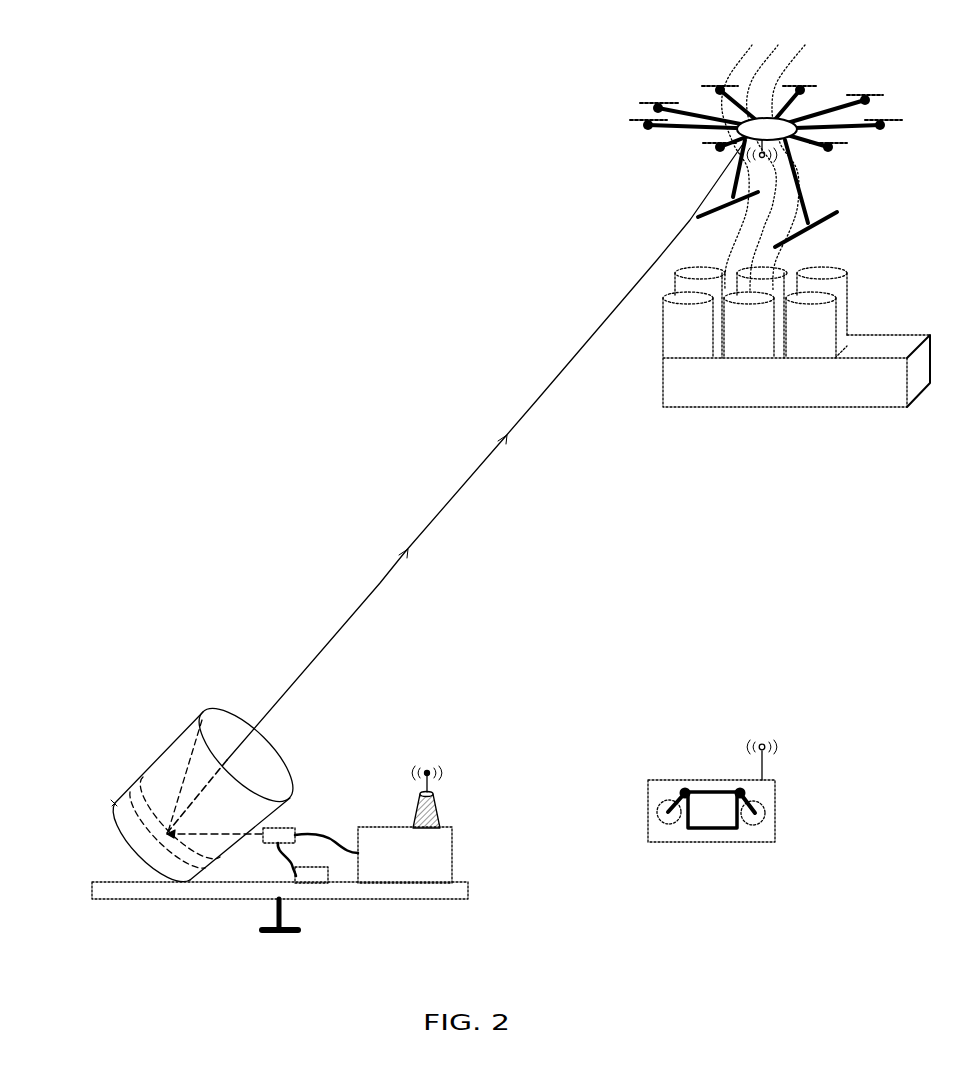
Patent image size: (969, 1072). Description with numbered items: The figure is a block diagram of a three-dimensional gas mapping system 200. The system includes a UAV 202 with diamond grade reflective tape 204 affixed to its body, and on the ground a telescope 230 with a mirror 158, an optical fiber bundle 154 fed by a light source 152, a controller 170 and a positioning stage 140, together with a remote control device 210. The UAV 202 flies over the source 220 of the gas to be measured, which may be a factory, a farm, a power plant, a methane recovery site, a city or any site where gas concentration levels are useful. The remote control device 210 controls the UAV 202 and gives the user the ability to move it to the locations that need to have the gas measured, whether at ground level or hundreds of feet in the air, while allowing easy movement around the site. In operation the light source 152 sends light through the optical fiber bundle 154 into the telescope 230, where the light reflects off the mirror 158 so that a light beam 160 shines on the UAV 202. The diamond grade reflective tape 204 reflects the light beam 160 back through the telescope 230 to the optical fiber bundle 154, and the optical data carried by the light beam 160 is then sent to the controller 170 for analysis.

The three-dimensional gas mapping system 200 is at (360, 390).
The UAV 202 is at (769, 128).
The diamond grade reflective tape 204 is at (786, 145).
The light beam 160 is at (438, 518).
The source of gas 220 is at (750, 395).
The remote control device 210 is at (680, 833).
The positioning stage 140 is at (233, 897).
The telescope 230 is at (185, 760).
The mirror 158 is at (117, 802).
The optical fiber bundle 154 is at (277, 830).
The light source 152 is at (308, 870).
The controller 170 is at (437, 852).